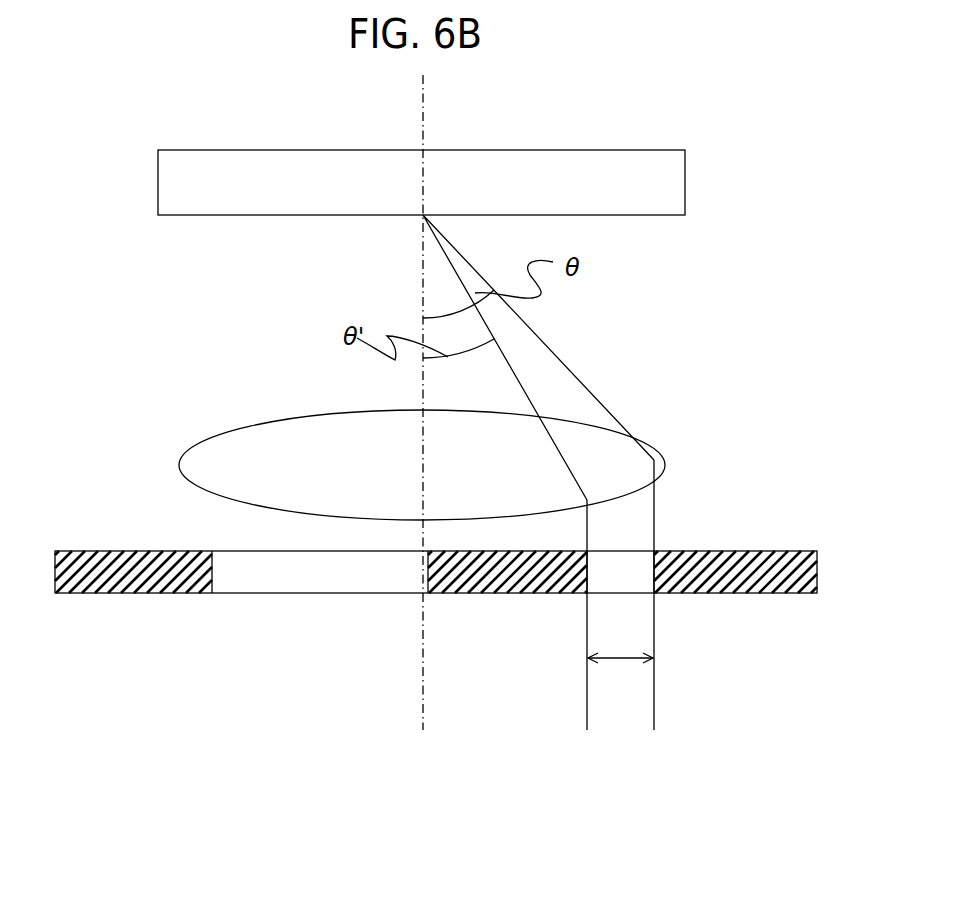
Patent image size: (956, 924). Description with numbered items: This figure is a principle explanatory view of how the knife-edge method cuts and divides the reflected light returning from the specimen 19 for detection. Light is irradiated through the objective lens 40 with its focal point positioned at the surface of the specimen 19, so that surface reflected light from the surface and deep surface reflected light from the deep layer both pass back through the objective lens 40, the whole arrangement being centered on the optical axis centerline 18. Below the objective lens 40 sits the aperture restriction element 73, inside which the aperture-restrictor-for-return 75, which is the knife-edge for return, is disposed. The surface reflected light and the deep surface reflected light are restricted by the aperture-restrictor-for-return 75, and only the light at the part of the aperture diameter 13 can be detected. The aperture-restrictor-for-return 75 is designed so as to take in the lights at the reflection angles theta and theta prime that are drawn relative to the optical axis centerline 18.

The specimen 19 is at (312, 150).
The objective lens 40 is at (307, 428).
The aperture restriction element 73 is at (758, 551).
The aperture-restrictor-for-return 75 is at (598, 593).
The aperture diameter 13 is at (620, 665).
The optical axis centerline 18 is at (423, 708).